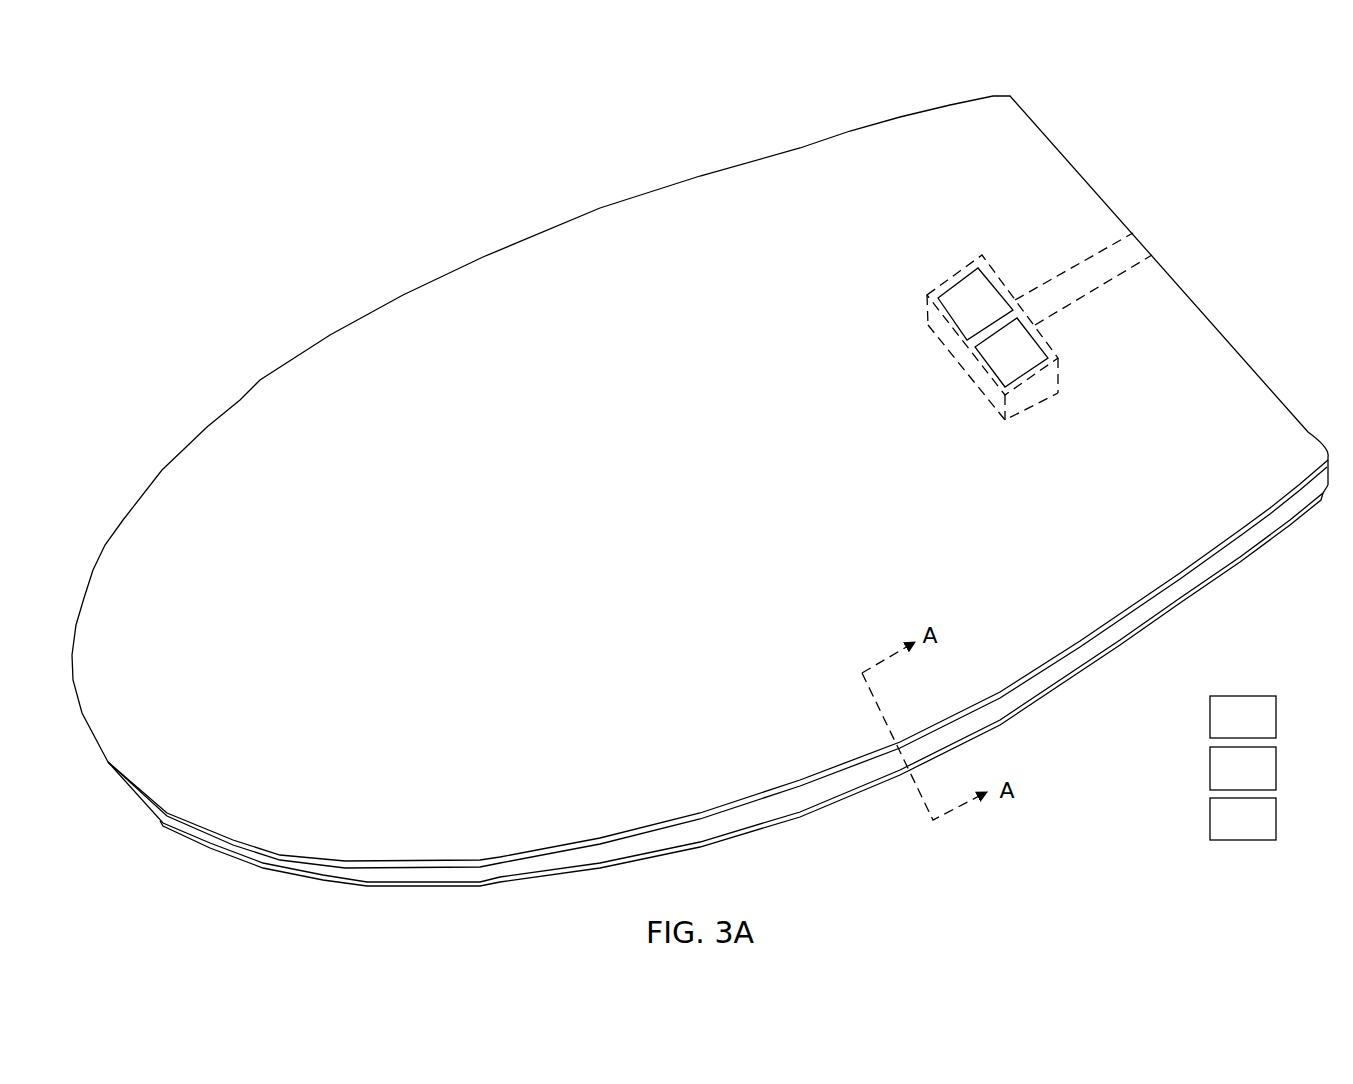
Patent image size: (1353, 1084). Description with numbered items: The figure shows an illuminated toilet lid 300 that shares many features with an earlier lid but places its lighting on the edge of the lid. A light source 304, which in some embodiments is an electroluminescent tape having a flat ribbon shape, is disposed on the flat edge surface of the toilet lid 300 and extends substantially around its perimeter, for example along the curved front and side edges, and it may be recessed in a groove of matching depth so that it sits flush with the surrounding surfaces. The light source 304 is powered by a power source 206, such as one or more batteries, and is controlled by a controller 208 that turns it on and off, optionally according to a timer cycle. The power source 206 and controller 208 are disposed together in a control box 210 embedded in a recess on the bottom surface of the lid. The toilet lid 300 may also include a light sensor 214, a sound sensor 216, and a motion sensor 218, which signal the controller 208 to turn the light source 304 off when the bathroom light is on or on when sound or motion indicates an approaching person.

The toilet lid 300 is at (298, 110).
The light source 304 is at (1123, 632).
The control box 210 is at (950, 285).
The power source 206 is at (993, 314).
The controller 208 is at (1030, 365).
The light sensor 214 is at (1264, 729).
The sound sensor 216 is at (1264, 780).
The motion sensor 218 is at (1264, 831).